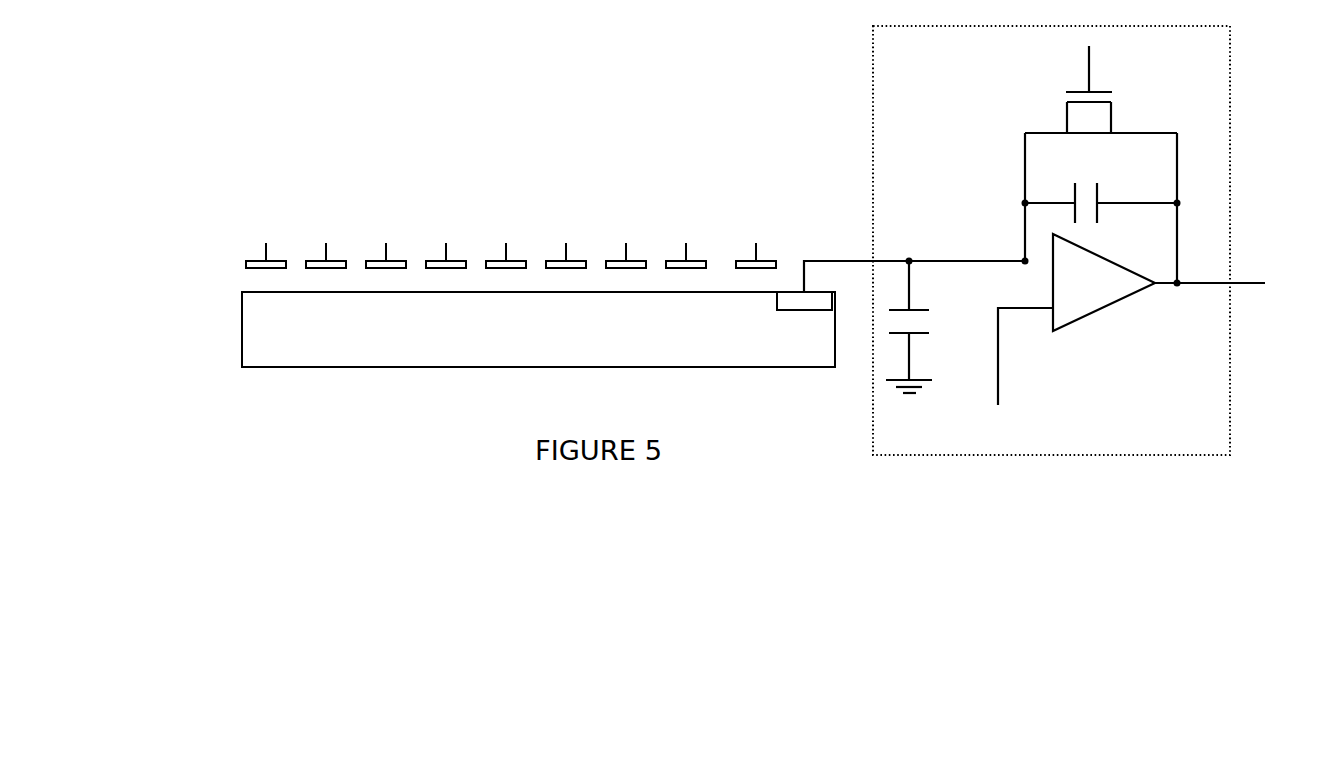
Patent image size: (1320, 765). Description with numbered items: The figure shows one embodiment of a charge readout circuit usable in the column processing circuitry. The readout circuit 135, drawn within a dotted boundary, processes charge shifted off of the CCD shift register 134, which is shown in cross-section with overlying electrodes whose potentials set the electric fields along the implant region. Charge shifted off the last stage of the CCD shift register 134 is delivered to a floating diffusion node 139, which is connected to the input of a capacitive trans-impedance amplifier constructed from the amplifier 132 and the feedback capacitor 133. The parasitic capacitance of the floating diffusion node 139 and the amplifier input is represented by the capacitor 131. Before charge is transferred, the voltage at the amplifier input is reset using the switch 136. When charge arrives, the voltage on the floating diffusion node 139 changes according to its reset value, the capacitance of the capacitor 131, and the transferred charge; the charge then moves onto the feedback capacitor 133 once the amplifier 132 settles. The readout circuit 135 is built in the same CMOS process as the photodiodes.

The capacitor 131 is at (925, 333).
The amplifier 132 is at (1105, 308).
The feedback capacitor 133 is at (1097, 183).
The CCD shift register 134 is at (242, 330).
The readout circuit 135 is at (1229, 386).
The switch 136 is at (1067, 102).
The floating diffusion node 139 is at (798, 302).